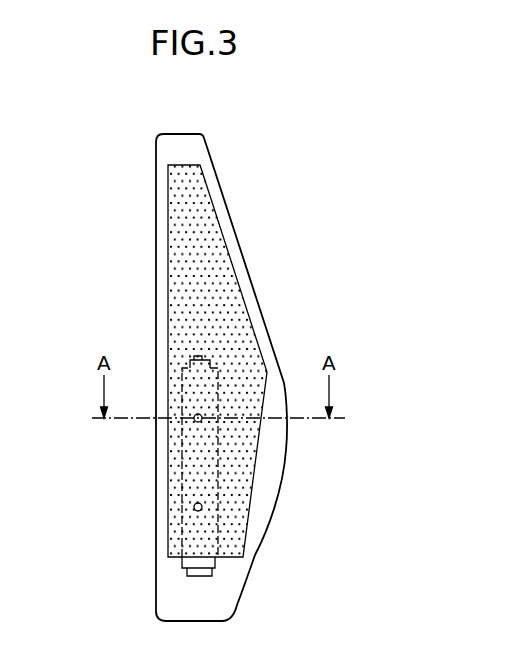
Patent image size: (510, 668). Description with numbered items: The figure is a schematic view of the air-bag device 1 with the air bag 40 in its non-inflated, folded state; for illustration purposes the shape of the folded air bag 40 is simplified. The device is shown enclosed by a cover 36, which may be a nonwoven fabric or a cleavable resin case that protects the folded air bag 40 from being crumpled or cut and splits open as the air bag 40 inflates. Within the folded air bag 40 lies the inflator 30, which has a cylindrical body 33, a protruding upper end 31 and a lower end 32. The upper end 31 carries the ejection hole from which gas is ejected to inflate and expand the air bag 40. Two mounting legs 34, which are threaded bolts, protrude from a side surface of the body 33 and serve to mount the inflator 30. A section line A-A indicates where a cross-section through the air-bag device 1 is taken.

The air-bag device 1 is at (105, 168).
The inflator 30 is at (230, 443).
The upper end 31 is at (192, 357).
The lower end 32 is at (200, 577).
The body 33 is at (218, 481).
The mounting legs 34 is at (195, 421).
The cover 36 is at (215, 175).
The air bag 40 is at (213, 233).